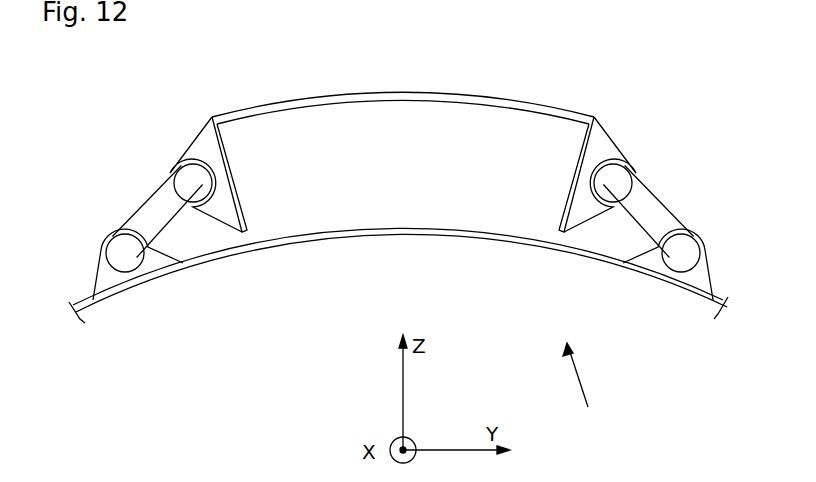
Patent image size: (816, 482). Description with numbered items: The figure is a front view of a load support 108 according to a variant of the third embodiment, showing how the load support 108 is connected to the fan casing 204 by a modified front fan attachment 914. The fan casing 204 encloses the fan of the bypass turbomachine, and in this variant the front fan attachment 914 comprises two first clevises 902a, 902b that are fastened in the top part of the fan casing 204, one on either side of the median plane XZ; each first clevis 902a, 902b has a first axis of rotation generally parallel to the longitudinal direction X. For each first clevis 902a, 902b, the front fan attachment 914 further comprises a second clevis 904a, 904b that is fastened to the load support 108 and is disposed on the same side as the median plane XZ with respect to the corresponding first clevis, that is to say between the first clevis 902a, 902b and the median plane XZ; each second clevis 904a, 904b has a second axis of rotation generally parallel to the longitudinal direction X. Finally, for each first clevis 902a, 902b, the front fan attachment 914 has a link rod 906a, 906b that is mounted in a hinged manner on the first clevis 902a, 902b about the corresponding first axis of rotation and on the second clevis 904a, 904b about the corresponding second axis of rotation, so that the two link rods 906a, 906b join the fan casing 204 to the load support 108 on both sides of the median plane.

The load support 108 is at (350, 101).
The fan casing 204 is at (505, 238).
The first clevis 902a is at (155, 258).
The first clevis 902b is at (652, 262).
The second clevis 904a is at (203, 147).
The second clevis 904b is at (600, 150).
The link rod 906a is at (160, 218).
The link rod 906b is at (640, 213).
The front fan attachment 914 is at (589, 390).